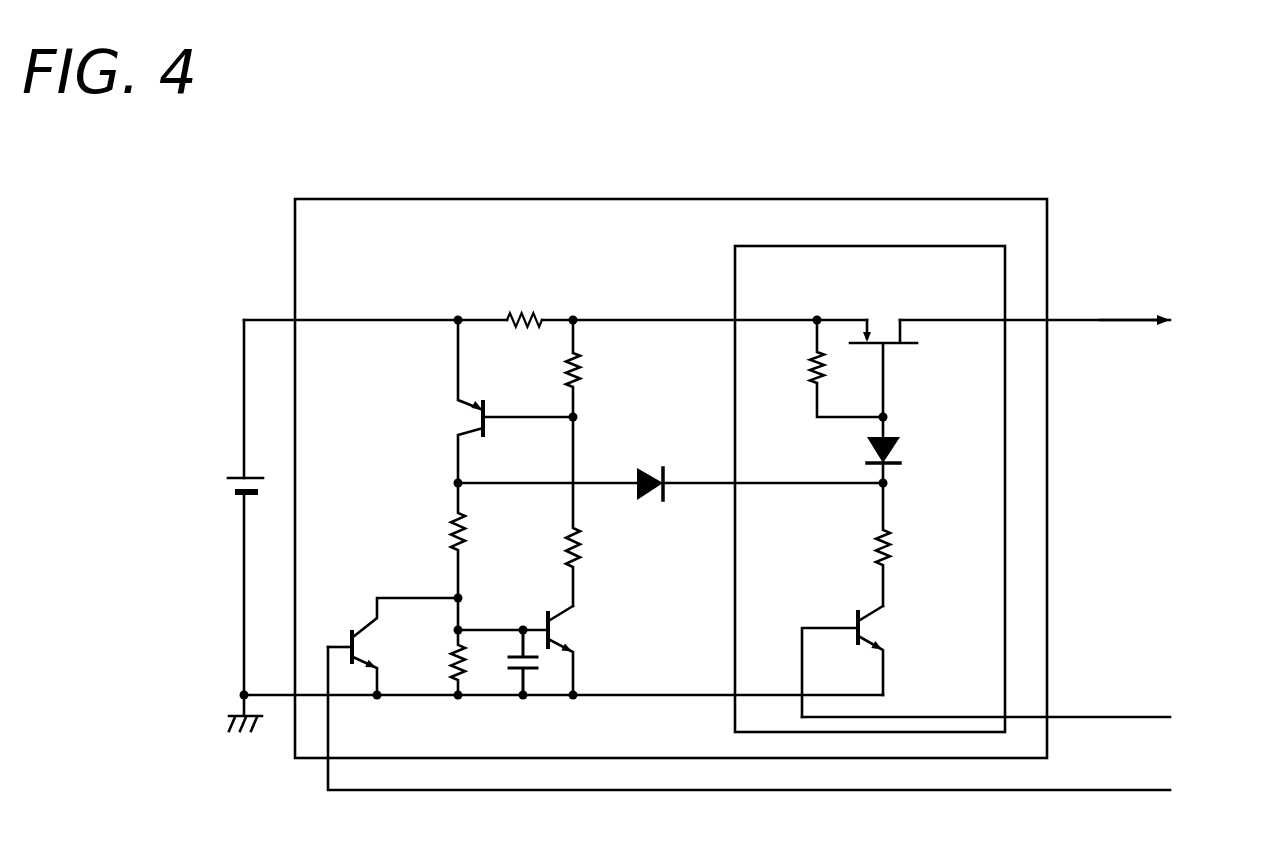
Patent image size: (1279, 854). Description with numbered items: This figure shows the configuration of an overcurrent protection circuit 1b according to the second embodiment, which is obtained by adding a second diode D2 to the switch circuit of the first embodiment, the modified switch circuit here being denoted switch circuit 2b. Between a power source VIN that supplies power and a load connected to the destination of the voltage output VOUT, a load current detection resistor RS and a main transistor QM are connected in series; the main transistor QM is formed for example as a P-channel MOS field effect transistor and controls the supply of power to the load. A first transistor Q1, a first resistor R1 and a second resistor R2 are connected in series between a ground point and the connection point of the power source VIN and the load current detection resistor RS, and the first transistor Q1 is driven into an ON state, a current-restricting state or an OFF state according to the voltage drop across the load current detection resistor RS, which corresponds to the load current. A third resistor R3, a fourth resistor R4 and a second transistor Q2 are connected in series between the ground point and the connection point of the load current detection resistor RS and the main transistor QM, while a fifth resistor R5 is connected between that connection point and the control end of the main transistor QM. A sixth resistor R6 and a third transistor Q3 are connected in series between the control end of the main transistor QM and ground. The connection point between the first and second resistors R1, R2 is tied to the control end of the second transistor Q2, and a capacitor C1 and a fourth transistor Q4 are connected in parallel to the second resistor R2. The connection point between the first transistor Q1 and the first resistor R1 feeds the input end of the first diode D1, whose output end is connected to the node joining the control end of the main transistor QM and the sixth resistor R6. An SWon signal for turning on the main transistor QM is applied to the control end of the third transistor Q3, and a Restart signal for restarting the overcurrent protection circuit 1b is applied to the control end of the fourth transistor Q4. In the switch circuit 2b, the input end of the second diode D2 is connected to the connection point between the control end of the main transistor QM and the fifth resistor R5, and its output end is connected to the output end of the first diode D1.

The overcurrent protection circuit 1b is at (671, 462).
The switch circuit 2b is at (870, 473).
The load current detection resistor RS is at (516, 300).
The first resistor R1 is at (427, 543).
The second resistor R2 is at (432, 646).
The third resistor R3 is at (550, 371).
The fourth resistor R4 is at (607, 511).
The fifth resistor R5 is at (823, 371).
The sixth resistor R6 is at (909, 544).
The first transistor Q1 is at (481, 401).
The second transistor Q2 is at (591, 650).
The third transistor Q3 is at (873, 661).
The fourth transistor Q4 is at (390, 646).
The main transistor QM is at (865, 343).
The first diode D1 is at (669, 461).
The second diode D2 is at (912, 452).
The capacitor C1 is at (503, 661).
The power source VIN is at (207, 525).
The voltage output VOUT is at (1175, 307).
The SWon signal SWon is at (1026, 710).
The Restart signal Restart is at (801, 722).